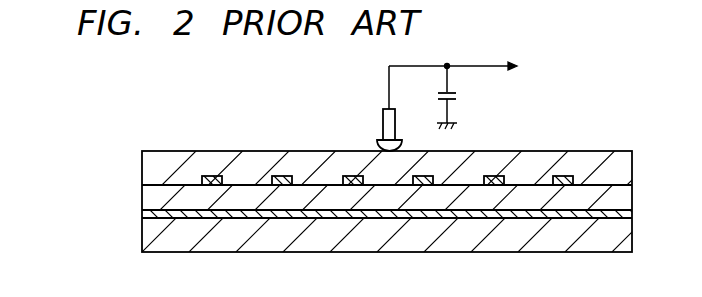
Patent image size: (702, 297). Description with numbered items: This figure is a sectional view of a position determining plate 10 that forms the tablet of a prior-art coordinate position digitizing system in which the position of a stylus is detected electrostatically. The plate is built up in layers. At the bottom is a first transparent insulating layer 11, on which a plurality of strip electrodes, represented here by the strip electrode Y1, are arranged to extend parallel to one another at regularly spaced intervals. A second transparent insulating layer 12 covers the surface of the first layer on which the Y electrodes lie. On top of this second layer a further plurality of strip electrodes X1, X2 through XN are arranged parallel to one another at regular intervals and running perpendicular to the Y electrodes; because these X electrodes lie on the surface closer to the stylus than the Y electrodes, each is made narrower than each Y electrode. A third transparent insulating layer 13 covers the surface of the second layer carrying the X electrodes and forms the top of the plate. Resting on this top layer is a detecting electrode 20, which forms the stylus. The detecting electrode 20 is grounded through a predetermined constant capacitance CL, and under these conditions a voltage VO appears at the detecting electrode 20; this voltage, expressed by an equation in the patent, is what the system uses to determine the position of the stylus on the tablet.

The position determining plate 10 is at (57, 213).
The first transparent insulating layer 11 is at (150, 233).
The second transparent insulating layer 12 is at (147, 198).
The third transparent insulating layer 13 is at (146, 168).
The detecting electrode 20 is at (385, 123).
The strip electrode X1 is at (213, 176).
The strip electrode X2 is at (281, 176).
The strip electrode XN is at (565, 176).
The strip electrode Y1 is at (147, 213).
The constant capacitance CL is at (461, 97).
The voltage VO is at (468, 69).